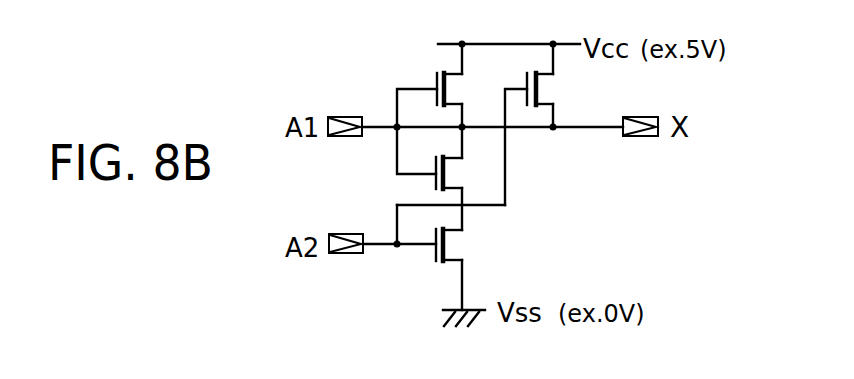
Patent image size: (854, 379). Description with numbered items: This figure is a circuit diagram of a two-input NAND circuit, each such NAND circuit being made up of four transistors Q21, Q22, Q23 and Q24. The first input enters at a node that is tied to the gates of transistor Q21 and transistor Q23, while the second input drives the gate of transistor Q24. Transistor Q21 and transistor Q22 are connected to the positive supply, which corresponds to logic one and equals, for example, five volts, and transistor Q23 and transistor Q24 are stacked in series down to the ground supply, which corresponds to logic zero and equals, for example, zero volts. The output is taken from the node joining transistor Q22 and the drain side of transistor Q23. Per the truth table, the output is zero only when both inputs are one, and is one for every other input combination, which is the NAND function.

The transistor Q21 is at (423, 74).
The transistor Q22 is at (572, 86).
The transistor Q23 is at (433, 155).
The transistor Q24 is at (481, 245).